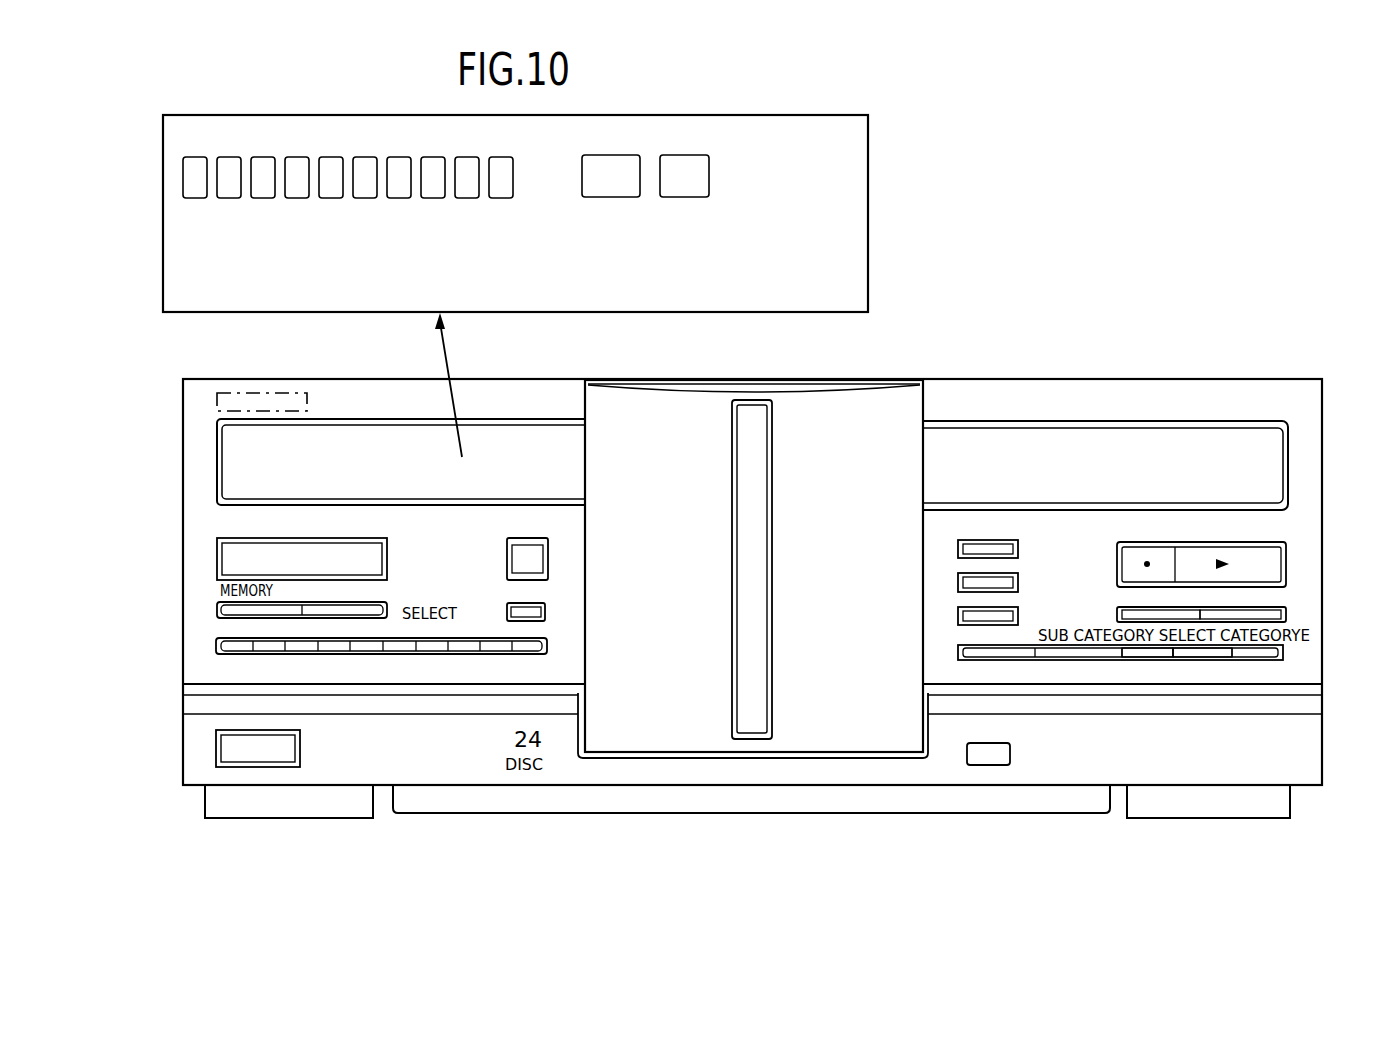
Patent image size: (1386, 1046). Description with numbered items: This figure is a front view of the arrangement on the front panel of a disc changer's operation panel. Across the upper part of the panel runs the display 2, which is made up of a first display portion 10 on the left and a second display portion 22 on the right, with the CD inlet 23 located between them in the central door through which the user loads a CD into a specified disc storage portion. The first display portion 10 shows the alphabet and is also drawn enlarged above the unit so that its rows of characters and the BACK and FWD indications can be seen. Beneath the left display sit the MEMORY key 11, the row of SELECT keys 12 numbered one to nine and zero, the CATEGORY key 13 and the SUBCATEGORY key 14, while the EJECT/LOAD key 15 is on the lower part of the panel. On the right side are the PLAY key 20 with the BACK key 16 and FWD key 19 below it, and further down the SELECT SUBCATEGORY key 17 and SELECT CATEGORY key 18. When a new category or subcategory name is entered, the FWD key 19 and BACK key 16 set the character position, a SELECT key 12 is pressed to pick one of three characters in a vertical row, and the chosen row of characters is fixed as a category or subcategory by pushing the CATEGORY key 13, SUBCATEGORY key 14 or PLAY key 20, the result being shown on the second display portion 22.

The display 2 is at (1158, 333).
The first display portion 10 is at (870, 225).
The MEMORY key 11 is at (222, 609).
The SELECT keys 12 is at (547, 658).
The CATEGORY key 13 is at (532, 560).
The SUBCATEGORY key 14 is at (540, 613).
The EJECT/LOAD key 15 is at (988, 757).
The BACK key 16 is at (1118, 612).
The SELECT SUBCATEGORY key 17 is at (1150, 657).
The SELECT CATEGORY key 18 is at (1230, 657).
The FWD key 19 is at (1283, 617).
The PLAY key 20 is at (1270, 562).
The second display portion 22 is at (1058, 487).
The CD inlet 23 is at (755, 682).